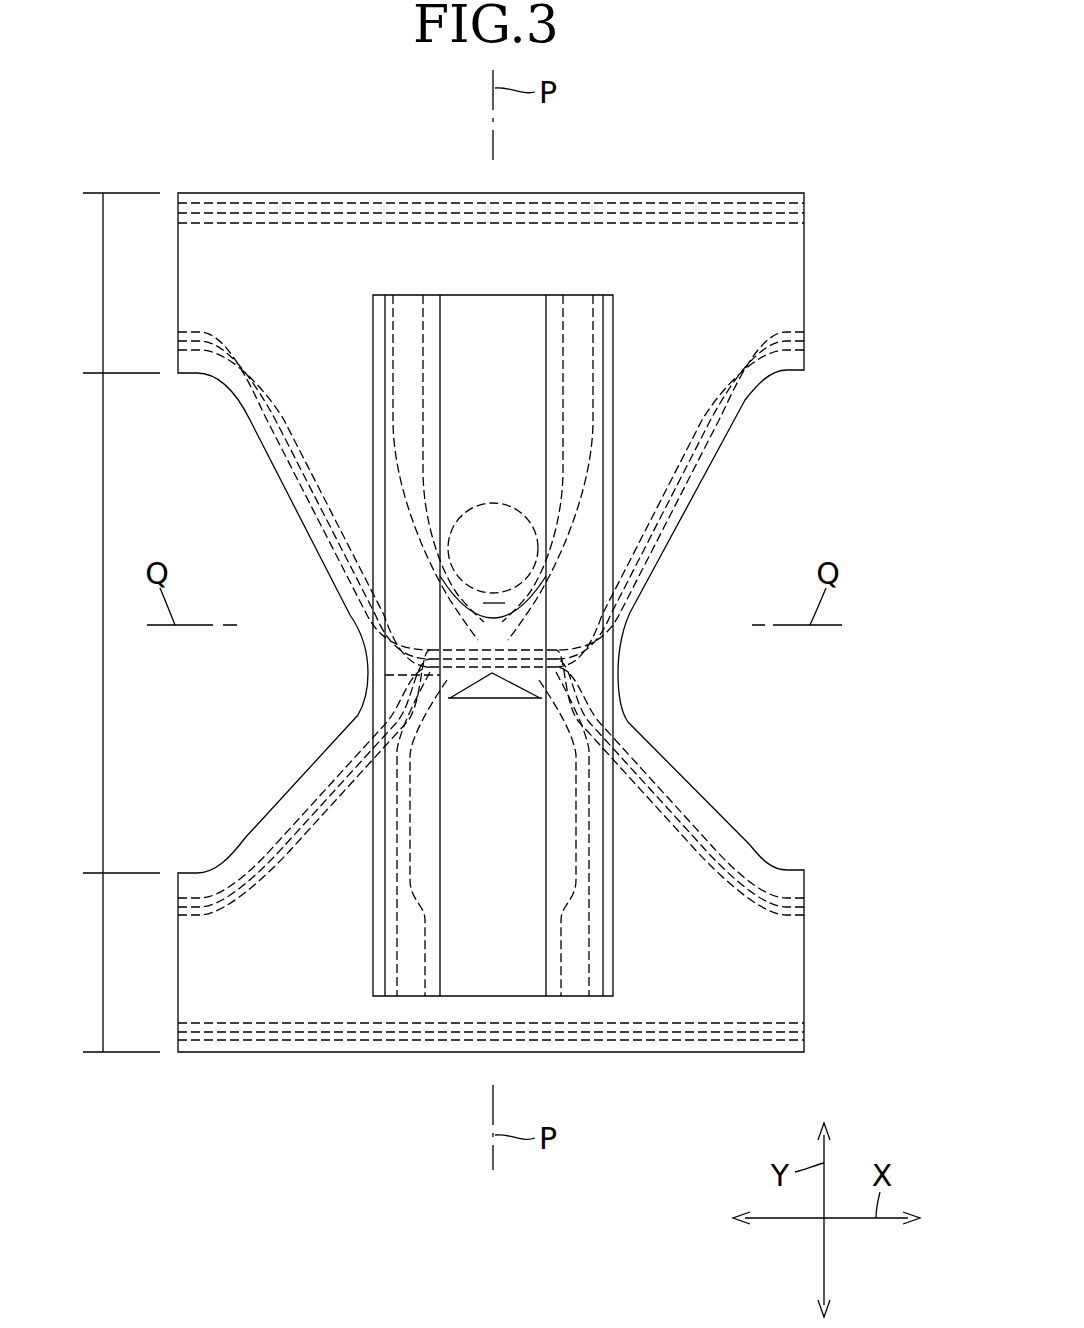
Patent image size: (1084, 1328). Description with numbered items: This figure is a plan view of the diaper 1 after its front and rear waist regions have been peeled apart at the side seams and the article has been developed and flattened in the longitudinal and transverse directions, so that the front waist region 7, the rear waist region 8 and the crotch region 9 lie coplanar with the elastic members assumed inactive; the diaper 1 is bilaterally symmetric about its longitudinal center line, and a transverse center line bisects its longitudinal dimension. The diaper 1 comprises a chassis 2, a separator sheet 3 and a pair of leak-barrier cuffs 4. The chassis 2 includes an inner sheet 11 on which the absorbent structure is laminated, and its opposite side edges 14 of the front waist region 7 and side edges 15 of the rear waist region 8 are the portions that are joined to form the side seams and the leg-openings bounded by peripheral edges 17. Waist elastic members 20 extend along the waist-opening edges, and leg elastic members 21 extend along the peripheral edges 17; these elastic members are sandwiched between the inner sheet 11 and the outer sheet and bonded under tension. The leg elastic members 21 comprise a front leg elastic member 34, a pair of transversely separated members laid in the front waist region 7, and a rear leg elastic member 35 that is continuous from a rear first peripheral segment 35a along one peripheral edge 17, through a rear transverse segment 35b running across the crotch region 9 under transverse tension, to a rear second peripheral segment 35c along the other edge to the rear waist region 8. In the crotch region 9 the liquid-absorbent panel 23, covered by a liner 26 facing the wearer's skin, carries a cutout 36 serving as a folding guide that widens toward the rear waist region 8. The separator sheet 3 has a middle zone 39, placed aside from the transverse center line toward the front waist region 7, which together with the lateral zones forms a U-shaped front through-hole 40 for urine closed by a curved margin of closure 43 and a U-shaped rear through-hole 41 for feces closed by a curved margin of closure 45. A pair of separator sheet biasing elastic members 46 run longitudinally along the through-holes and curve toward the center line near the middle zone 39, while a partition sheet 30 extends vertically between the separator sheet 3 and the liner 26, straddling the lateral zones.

The diaper 1 is at (247, 103).
The chassis 2 is at (218, 172).
The separator sheet 3 is at (483, 600).
The leak-barrier cuffs 4 is at (395, 547).
The front waist region 7 is at (103, 960).
The rear waist region 8 is at (103, 285).
The crotch region 9 is at (103, 648).
The inner sheet 11 is at (262, 1008).
The side edges of the front waist region 14 is at (195, 963).
The side edges of the rear waist region 15 is at (195, 270).
The peripheral edges of the leg-openings 17 is at (320, 573).
The waist elastic members 20 is at (637, 193).
The leg elastic members 21 is at (491, 623).
The liquid-absorbent panel 23 is at (480, 294).
The liner facing the wearer's skin 26 is at (458, 313).
The partition sheet 30 is at (492, 675).
The front leg elastic member 34 is at (330, 752).
The rear leg elastic member 35 is at (333, 602).
The rear first peripheral segment 35a is at (283, 402).
The rear transverse segment 35b is at (385, 675).
The rear second peripheral segment 35c is at (700, 402).
The cutout 36 is at (485, 500).
The middle zone 39 is at (485, 683).
The front through-hole 40 is at (457, 975).
The rear through-hole 41 is at (510, 335).
The curved margin of closure 43 is at (500, 683).
The curved margin of closure 45 is at (496, 603).
The separator sheet biasing elastic members 46 is at (492, 598).